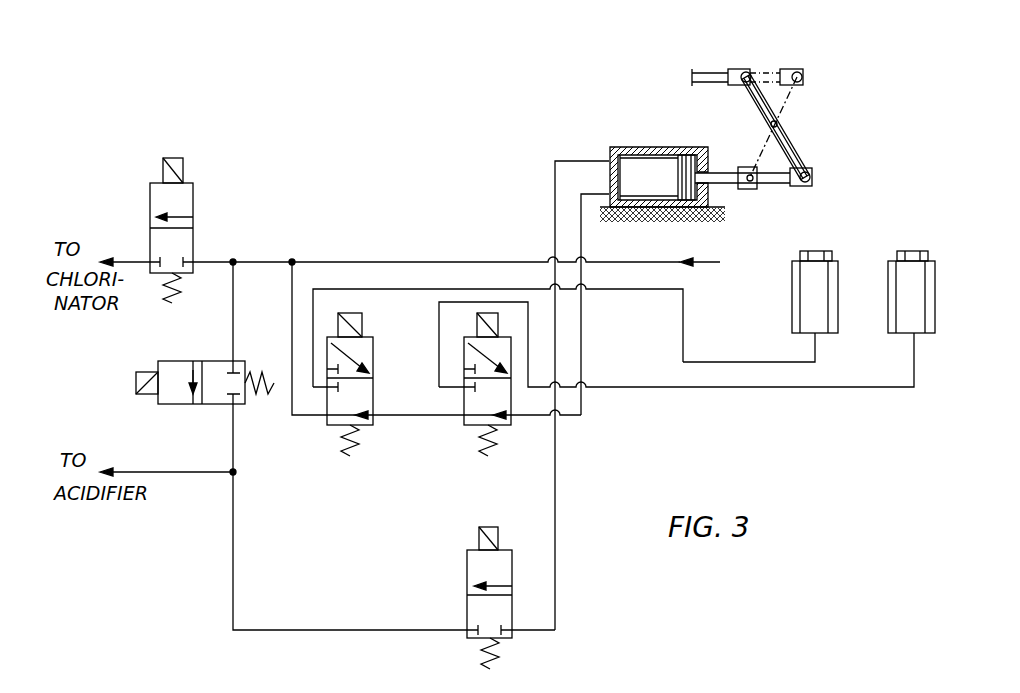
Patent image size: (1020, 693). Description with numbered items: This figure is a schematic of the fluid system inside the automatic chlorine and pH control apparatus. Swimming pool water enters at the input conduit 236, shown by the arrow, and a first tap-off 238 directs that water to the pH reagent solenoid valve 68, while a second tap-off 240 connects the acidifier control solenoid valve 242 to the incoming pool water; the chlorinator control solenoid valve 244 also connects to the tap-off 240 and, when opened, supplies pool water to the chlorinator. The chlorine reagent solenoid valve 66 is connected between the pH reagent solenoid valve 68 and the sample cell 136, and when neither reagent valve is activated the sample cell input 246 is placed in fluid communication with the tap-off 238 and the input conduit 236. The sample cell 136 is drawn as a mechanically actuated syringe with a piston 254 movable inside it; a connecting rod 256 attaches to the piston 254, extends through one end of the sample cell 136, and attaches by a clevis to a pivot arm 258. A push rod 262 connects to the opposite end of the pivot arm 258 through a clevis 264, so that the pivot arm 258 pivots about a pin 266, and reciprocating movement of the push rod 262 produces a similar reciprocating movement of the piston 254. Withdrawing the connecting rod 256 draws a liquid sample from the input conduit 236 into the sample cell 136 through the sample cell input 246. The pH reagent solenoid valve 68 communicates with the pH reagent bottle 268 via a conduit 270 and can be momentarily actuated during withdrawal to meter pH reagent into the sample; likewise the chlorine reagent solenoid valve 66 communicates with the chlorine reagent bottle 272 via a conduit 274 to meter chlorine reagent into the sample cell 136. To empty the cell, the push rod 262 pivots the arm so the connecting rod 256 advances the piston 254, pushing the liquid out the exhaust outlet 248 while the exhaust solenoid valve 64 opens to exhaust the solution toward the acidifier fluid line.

The exhaust solenoid valve 64 is at (512, 636).
The chlorine reagent solenoid valve 66 is at (512, 425).
The pH reagent solenoid valve 68 is at (374, 355).
The sample cell 136 is at (625, 147).
The input conduit 236 is at (648, 260).
The first tap-off 238 is at (293, 258).
The second tap-off 240 is at (235, 258).
The acidifier control solenoid valve 242 is at (212, 360).
The chlorinator control solenoid valve 244 is at (191, 198).
The sample cell input 246 is at (581, 236).
The exhaust outlet 248 is at (553, 192).
The piston 254 is at (684, 155).
The connecting rod 256 is at (778, 187).
The pivot arm 258 is at (793, 141).
The push rod 262 is at (700, 72).
The clevis 264 is at (813, 175).
The pin 266 is at (778, 120).
The pH reagent bottle 268 is at (838, 268).
The conduit 270 is at (700, 360).
The chlorine reagent bottle 272 is at (937, 270).
The conduit 274 is at (806, 390).